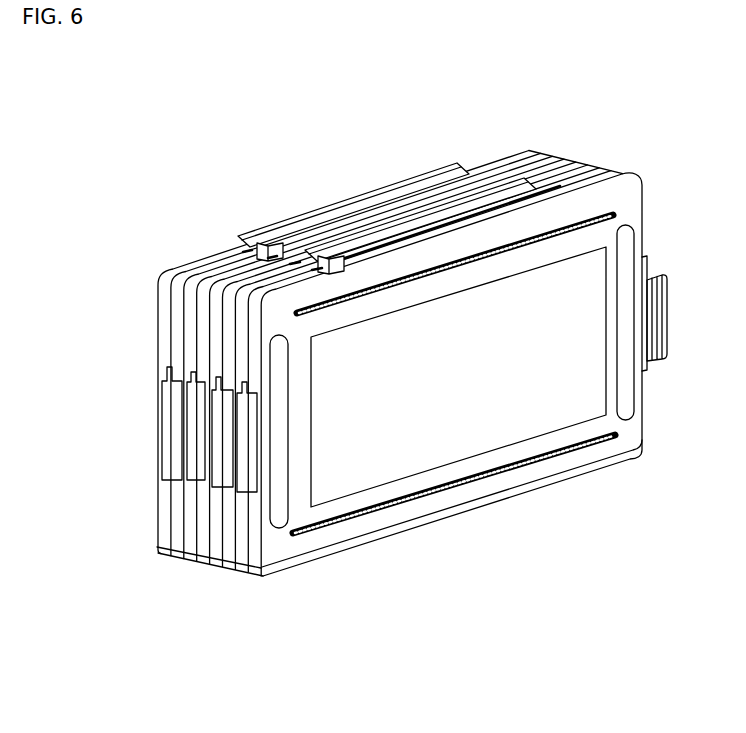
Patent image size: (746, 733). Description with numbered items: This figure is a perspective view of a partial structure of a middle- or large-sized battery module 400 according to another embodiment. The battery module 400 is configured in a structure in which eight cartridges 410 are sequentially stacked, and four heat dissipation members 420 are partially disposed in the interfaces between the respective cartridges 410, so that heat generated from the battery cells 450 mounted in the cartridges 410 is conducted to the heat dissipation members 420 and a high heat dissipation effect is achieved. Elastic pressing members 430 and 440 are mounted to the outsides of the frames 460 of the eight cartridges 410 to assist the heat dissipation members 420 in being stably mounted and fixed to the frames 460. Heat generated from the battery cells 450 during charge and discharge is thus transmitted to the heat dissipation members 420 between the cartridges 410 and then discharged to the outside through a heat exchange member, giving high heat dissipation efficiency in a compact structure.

The battery module 400 is at (68, 113).
The cartridge 410 is at (171, 265).
The heat dissipation member 420 is at (336, 199).
The elastic pressing member 430 is at (400, 513).
The elastic pressing member 440 is at (600, 216).
The battery cell 450 is at (592, 392).
The frame 460 is at (283, 537).